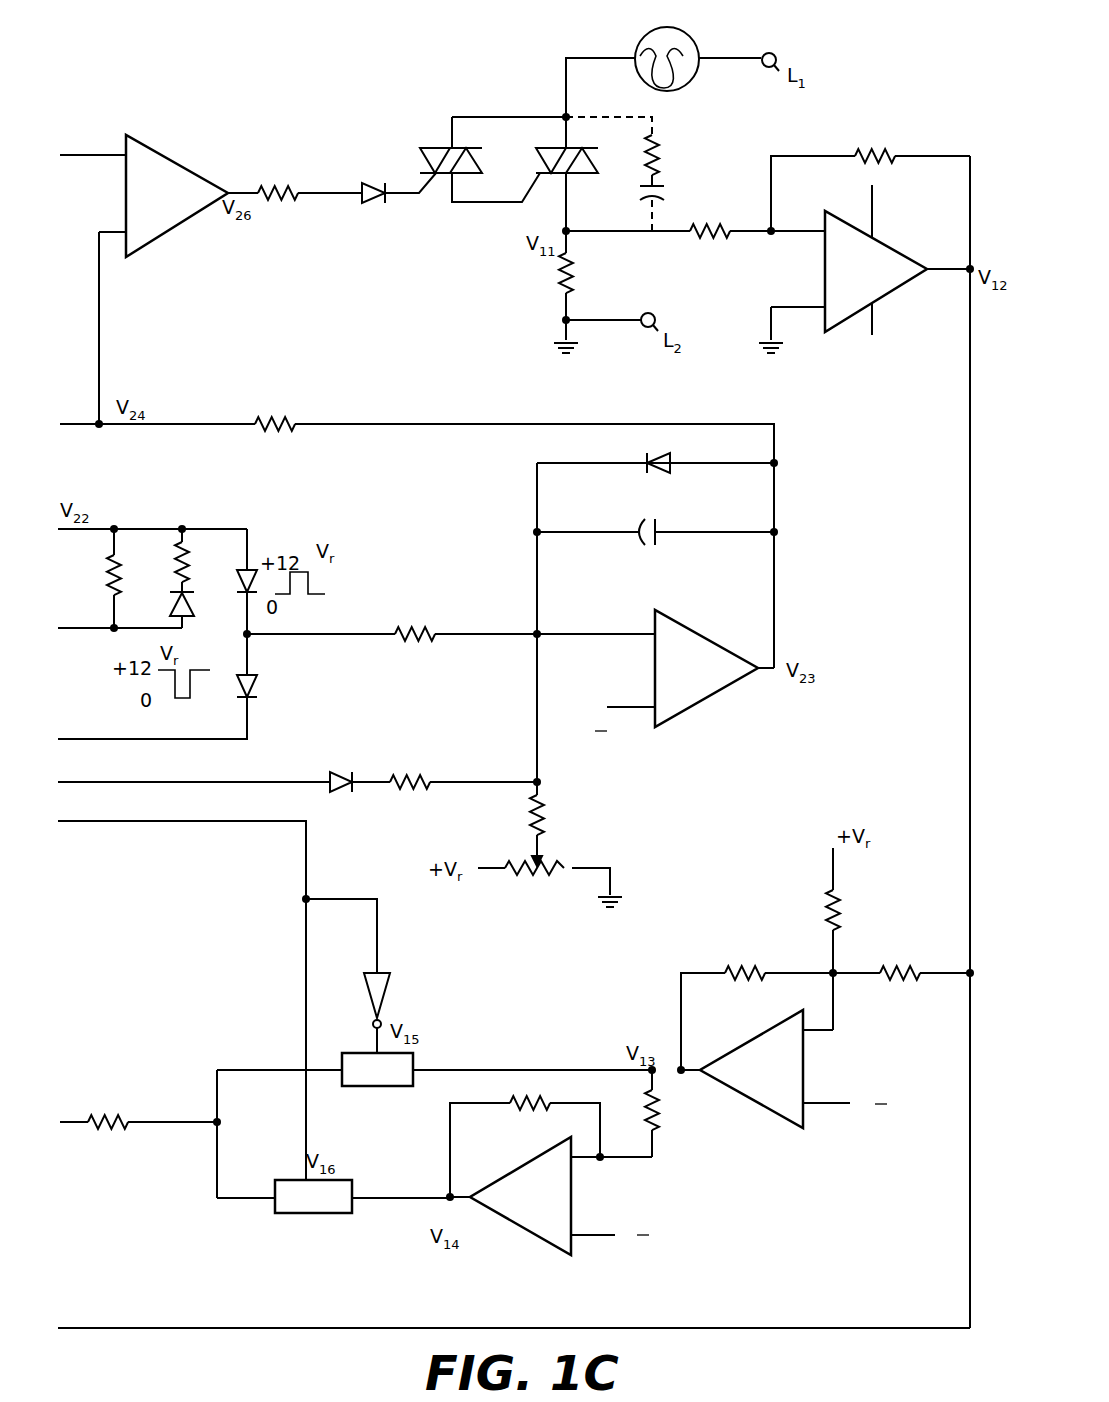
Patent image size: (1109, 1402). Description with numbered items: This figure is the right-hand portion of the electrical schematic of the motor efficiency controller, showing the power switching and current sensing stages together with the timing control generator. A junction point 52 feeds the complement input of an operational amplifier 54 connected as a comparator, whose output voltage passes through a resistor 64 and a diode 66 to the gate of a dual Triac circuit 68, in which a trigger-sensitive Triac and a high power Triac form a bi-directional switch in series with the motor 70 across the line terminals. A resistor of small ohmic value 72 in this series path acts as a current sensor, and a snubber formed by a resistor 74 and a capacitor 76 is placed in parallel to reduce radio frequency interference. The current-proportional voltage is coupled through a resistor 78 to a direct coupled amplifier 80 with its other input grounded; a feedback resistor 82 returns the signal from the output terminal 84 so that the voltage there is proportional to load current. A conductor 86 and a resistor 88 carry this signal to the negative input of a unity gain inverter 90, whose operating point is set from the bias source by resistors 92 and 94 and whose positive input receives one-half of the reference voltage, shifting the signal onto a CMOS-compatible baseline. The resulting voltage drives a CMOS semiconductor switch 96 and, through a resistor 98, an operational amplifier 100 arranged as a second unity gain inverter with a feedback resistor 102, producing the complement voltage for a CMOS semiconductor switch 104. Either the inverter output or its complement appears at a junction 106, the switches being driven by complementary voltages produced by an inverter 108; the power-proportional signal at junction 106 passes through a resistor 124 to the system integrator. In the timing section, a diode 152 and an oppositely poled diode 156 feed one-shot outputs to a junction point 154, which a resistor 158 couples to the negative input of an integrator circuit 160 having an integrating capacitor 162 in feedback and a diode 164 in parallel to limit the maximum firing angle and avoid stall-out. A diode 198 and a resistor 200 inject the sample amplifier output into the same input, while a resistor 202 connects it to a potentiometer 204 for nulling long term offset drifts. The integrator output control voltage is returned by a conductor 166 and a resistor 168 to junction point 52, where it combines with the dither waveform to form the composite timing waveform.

The junction point 52 is at (99, 427).
The operational amplifier 54 is at (178, 163).
The resistor 64 is at (280, 186).
The diode 66 is at (374, 205).
The dual Triac circuit 68 is at (521, 149).
The motor 70 is at (690, 48).
The resistor of small ohmic value 72 is at (576, 271).
The resistor 74 is at (660, 157).
The capacitor 76 is at (666, 193).
The resistor 78 is at (712, 242).
The direct coupled amplifier 80 is at (889, 257).
The feedback resistor 82 is at (878, 152).
The output terminal 84 is at (968, 271).
The conductor 86 is at (970, 472).
The resistor 88 is at (899, 985).
The unity gain inverter 90 is at (788, 1127).
The resistor 92 is at (843, 917).
The resistor 94 is at (737, 966).
The CMOS semiconductor switch 96 is at (374, 1087).
The resistor 98 is at (660, 1123).
The operational amplifier 100 is at (522, 1234).
The feedback resistor 102 is at (527, 1108).
The CMOS semiconductor switch 104 is at (313, 1213).
The junction 106 is at (215, 1124).
The inverter 108 is at (390, 1002).
The resistor 124 is at (105, 1128).
The diode 152 is at (256, 686).
The junction point 154 is at (250, 638).
The diode 156 is at (248, 575).
The resistor 158 is at (415, 640).
The integrator circuit 160 is at (726, 700).
The integrating capacitor 162 is at (655, 545).
The diode 164 is at (672, 470).
The conductor 166 is at (472, 423).
The resistor 168 is at (280, 422).
The diode 198 is at (338, 775).
The resistor 200 is at (412, 778).
The resistor 202 is at (548, 815).
The potentiometer 204 is at (551, 882).